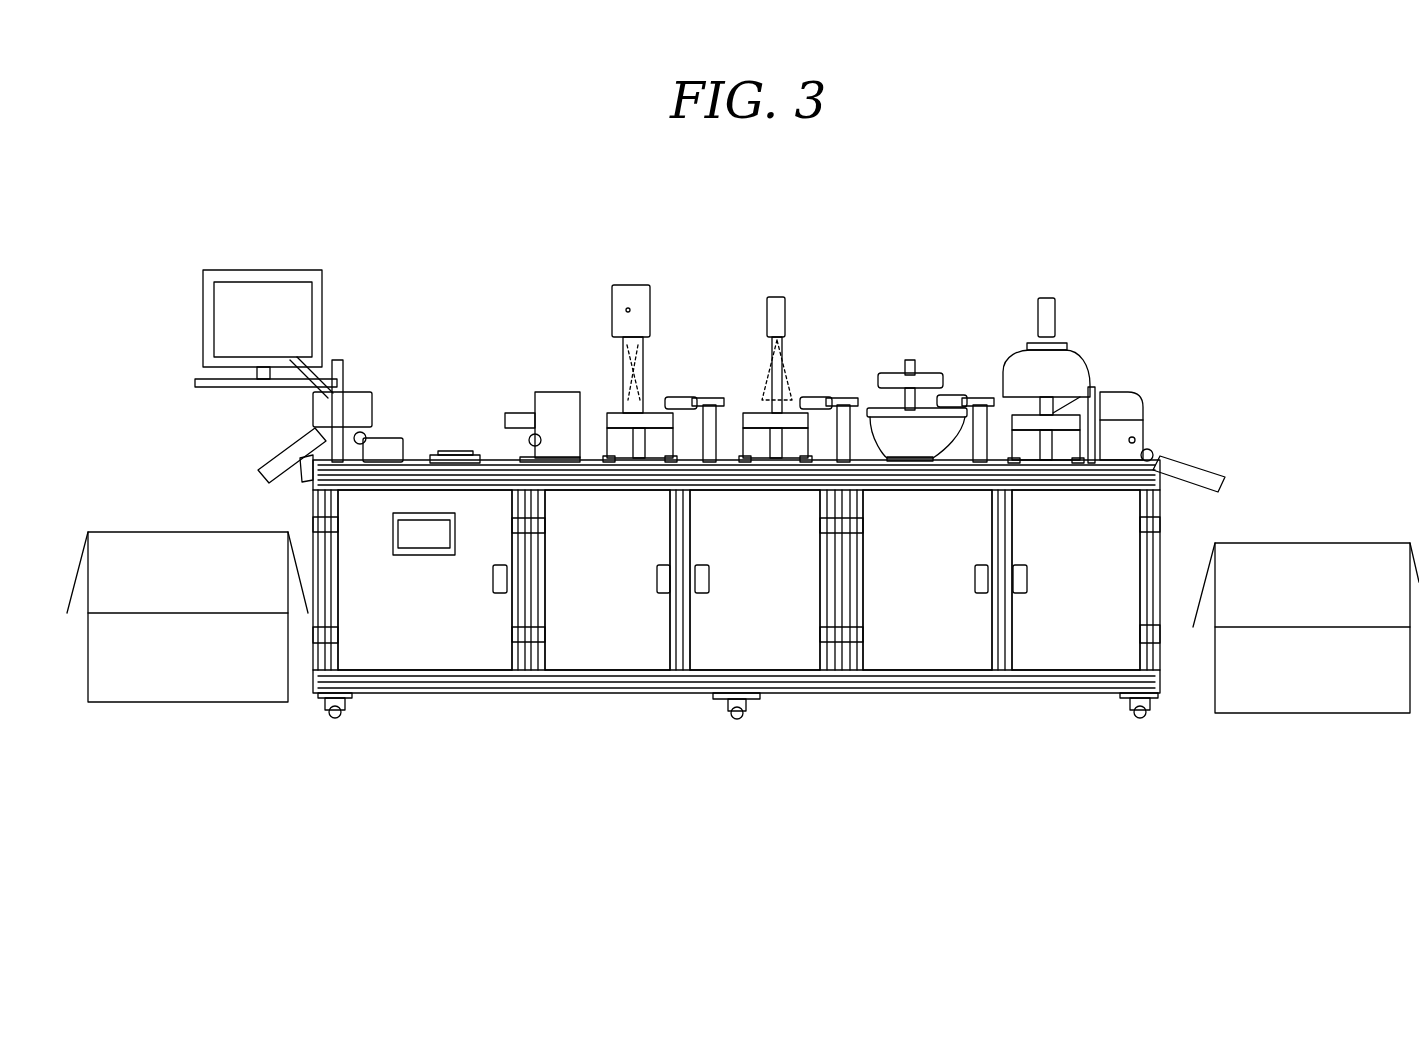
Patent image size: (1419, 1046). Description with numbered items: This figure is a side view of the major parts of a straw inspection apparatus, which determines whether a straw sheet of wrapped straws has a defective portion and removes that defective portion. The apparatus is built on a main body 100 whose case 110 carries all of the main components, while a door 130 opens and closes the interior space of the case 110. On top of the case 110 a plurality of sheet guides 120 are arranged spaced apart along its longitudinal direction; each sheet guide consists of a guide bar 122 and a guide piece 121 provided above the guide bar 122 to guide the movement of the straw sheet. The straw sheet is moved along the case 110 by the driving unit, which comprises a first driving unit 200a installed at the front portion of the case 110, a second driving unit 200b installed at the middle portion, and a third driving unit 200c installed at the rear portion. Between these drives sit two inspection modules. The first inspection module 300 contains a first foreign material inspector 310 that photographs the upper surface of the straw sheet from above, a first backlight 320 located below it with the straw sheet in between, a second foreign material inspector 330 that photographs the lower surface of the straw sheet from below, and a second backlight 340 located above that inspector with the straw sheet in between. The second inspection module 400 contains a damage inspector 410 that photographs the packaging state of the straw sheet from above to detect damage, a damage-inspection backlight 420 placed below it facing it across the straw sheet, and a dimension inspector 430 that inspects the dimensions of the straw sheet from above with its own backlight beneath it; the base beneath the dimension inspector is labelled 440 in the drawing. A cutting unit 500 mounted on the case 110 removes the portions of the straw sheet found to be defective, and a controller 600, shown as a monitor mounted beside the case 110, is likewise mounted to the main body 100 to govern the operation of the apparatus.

The main body 100 is at (1148, 805).
The case 110 is at (1160, 617).
The sheet guides 120 is at (875, 760).
The guide pieces 121 is at (800, 437).
The guide bars 122 is at (845, 432).
The door 130 is at (962, 655).
The first driving unit 200a is at (1147, 391).
The second driving unit 200b is at (558, 382).
The third driving unit 200c is at (365, 381).
The first inspection module 300 is at (1128, 243).
The first foreign material inspector 310 is at (1070, 370).
The first backlight 320 is at (1033, 420).
The second foreign material inspector 330 is at (933, 423).
The second backlight 340 is at (893, 383).
The second inspection module 400 is at (833, 233).
The damage inspector 410 is at (780, 295).
The damage-inspection backlight 420 is at (753, 420).
The dimension inspector 430 is at (637, 293).
The press base 440 is at (613, 413).
The cutting unit 500 is at (458, 440).
The controller 600 is at (183, 334).